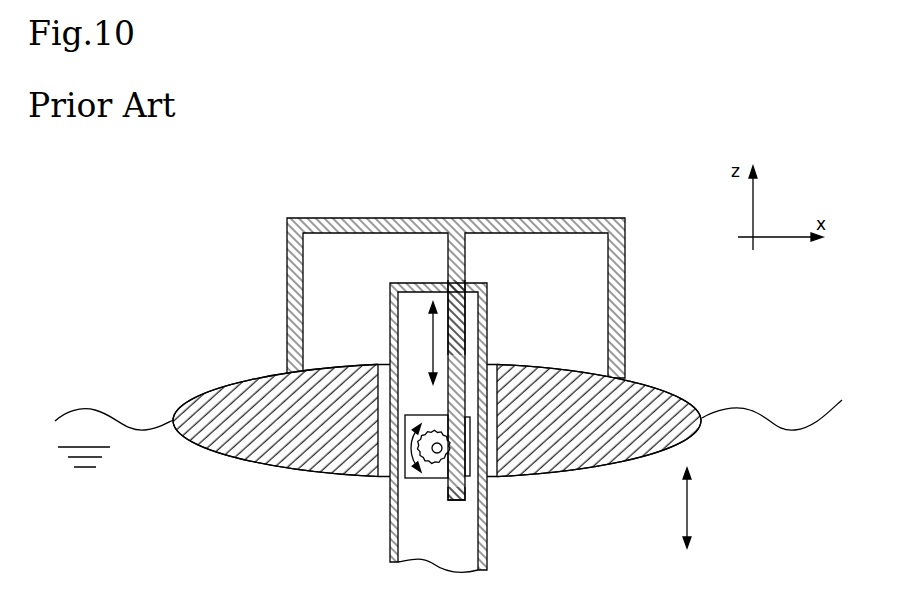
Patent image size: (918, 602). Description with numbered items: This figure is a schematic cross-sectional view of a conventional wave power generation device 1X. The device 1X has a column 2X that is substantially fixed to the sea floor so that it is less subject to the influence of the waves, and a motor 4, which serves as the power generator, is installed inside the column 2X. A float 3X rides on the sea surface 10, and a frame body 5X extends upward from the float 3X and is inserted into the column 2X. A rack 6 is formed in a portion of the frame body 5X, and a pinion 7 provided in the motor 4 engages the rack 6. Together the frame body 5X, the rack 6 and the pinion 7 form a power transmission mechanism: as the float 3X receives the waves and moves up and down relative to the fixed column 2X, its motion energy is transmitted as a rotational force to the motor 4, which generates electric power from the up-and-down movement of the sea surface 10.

The wave power generation device 1X is at (106, 213).
The column 2X is at (390, 313).
The float 3X is at (263, 462).
The motor 4 is at (436, 478).
The frame body 5X is at (287, 283).
The rack 6 is at (458, 500).
The pinion 7 is at (437, 418).
The sea surface 10 is at (100, 407).